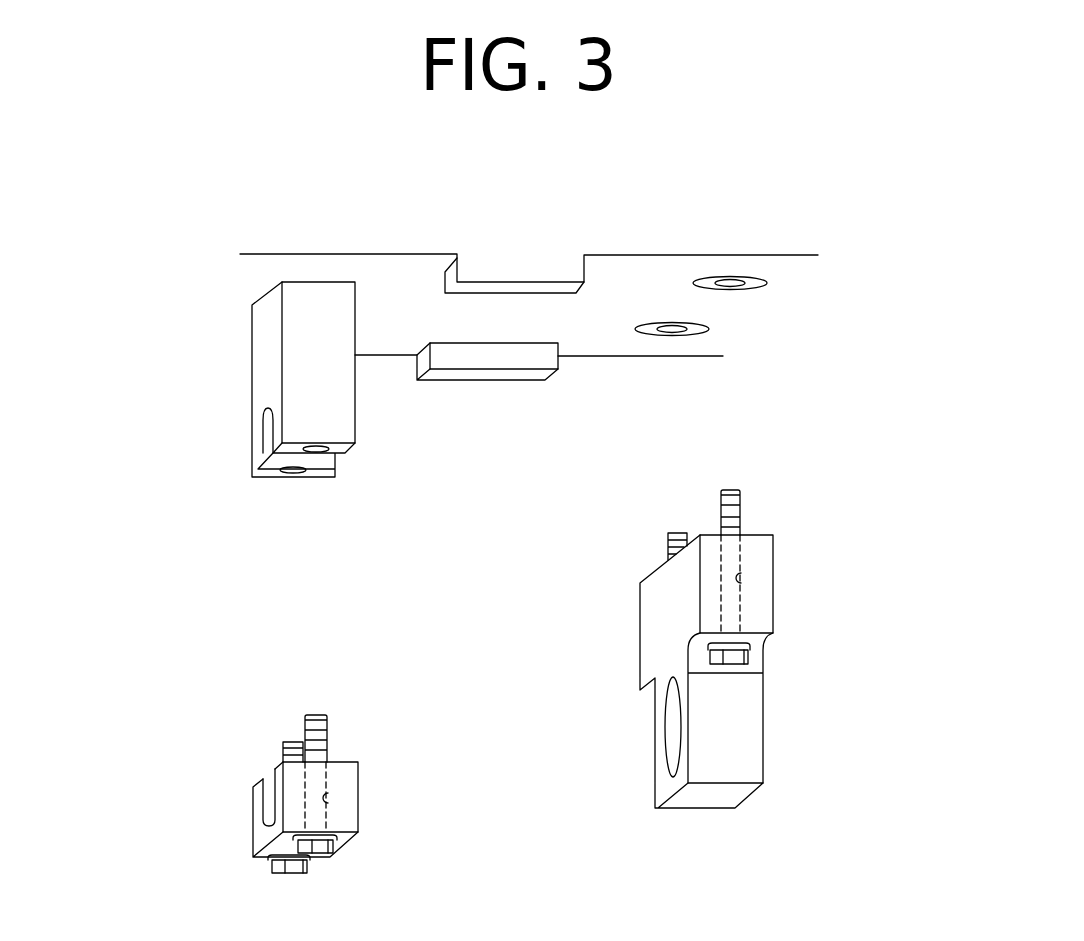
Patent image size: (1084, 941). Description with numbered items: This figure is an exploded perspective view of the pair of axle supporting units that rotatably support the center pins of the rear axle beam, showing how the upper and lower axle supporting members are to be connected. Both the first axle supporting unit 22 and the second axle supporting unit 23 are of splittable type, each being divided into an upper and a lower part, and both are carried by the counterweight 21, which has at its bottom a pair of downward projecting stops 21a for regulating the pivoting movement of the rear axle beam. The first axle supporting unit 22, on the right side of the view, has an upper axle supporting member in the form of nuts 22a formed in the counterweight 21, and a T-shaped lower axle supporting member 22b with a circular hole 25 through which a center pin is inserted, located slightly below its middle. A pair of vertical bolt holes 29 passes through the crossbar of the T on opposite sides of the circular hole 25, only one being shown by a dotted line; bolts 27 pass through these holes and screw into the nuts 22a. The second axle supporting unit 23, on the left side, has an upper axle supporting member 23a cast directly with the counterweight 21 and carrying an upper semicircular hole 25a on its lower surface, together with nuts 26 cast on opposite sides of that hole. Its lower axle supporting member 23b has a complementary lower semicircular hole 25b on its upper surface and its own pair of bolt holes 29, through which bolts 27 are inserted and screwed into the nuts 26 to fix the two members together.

The counterweight 21 is at (513, 450).
The stops 21a is at (482, 360).
The first axle supporting unit 22 is at (745, 495).
The nuts 22a is at (653, 327).
The lower axle supporting member 22b is at (724, 671).
The second axle supporting unit 23 is at (228, 577).
The upper axle supporting member 23a is at (268, 404).
The lower axle supporting member 23b is at (244, 811).
The circular hole 25 is at (673, 724).
The semicircular hole 25a is at (273, 453).
The semicircular hole 25b is at (267, 778).
The nuts 26 is at (316, 452).
The bolts 27 is at (678, 533).
The bolt holes 29 is at (740, 582).